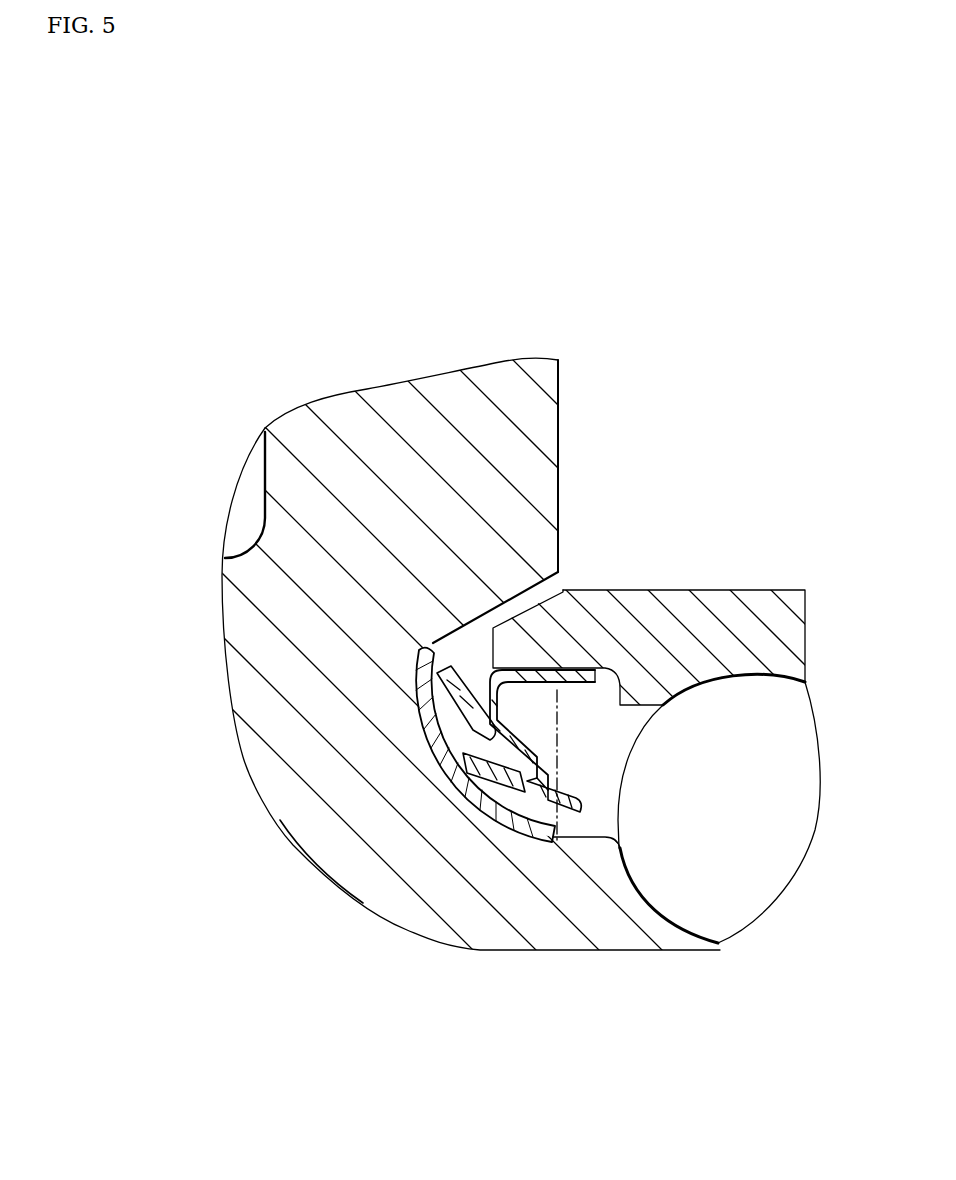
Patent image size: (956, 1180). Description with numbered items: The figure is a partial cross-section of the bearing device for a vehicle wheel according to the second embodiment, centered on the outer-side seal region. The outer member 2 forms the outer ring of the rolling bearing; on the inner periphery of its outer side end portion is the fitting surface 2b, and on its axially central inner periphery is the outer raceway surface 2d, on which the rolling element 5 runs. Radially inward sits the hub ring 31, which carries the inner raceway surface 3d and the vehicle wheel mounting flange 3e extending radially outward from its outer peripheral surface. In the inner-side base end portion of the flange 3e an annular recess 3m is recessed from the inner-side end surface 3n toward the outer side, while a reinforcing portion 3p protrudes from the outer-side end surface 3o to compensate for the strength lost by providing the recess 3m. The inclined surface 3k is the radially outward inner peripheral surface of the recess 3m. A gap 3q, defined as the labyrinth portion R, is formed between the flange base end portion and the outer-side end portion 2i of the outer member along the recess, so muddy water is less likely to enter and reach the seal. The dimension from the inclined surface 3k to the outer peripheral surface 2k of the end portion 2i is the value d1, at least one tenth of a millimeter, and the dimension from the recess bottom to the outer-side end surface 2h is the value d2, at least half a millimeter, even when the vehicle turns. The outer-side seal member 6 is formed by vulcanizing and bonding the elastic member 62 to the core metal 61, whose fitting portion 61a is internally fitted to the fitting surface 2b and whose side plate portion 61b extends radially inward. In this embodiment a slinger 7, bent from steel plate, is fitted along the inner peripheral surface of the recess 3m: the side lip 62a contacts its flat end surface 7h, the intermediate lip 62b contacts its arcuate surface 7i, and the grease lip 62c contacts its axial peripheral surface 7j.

The outer member 2 is at (677, 585).
The fitting surface 2b is at (610, 668).
The outer raceway surface 2d is at (740, 683).
The outer-side end surface 2h is at (493, 655).
The outer-side end portion 2i is at (532, 658).
The outer peripheral surface 2k is at (553, 648).
The inner raceway surface 3d is at (670, 915).
The vehicle wheel mounting flange 3e is at (428, 433).
The inclined surface 3k is at (512, 597).
The recess 3m is at (550, 738).
The inner-side end surface 3n is at (560, 478).
The outer-side end surface 3o is at (262, 477).
The reinforcing portion 3p is at (230, 597).
The gap 3q is at (565, 586).
The hub ring 31 is at (453, 897).
The rolling element (ball) 5 is at (760, 822).
The outer-side seal member 6 is at (339, 731).
The core metal 61 is at (336, 731).
The fitting portion 61a is at (437, 667).
The side plate portion 61b is at (445, 695).
The elastic member 62 is at (356, 743).
The side lip 62a is at (480, 734).
The intermediate lip 62b is at (490, 783).
The grease lip 62c is at (525, 820).
The slinger 7 is at (340, 745).
The flat end surface 7h is at (428, 650).
The arcuate surface 7i is at (462, 790).
The axial peripheral surface 7j is at (567, 838).
The labyrinth portion R is at (530, 582).
The value d1 is at (540, 605).
The value d2 is at (493, 630).